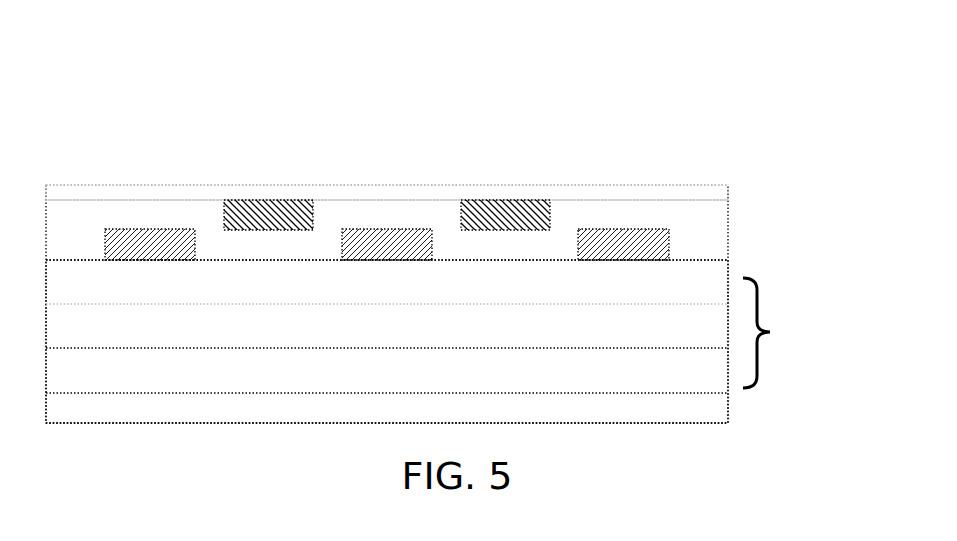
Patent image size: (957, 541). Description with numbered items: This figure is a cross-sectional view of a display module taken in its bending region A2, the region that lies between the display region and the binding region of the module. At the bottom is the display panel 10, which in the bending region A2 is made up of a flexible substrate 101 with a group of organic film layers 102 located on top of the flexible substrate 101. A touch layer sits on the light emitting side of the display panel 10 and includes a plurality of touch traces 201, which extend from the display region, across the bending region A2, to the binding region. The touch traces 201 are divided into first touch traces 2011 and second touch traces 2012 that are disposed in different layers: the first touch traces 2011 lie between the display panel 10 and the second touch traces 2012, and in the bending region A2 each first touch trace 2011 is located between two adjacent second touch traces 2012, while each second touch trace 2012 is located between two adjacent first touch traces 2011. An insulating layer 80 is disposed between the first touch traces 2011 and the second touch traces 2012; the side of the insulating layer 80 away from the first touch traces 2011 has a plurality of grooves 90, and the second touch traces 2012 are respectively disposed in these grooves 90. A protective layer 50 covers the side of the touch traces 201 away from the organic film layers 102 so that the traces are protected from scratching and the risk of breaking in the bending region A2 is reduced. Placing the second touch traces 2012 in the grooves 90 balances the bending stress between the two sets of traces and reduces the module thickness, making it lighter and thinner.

The bending region A2 is at (124, 112).
The display panel 10 is at (461, 341).
The flexible substrate 101 is at (728, 417).
The group of organic film layers 102 is at (431, 333).
The protective layer 50 is at (728, 192).
The insulating layer 80 is at (728, 228).
The groove 90 is at (503, 208).
The touch traces 201 is at (387, 136).
The first touch traces 2011 is at (418, 229).
The second touch traces 2012 is at (270, 200).